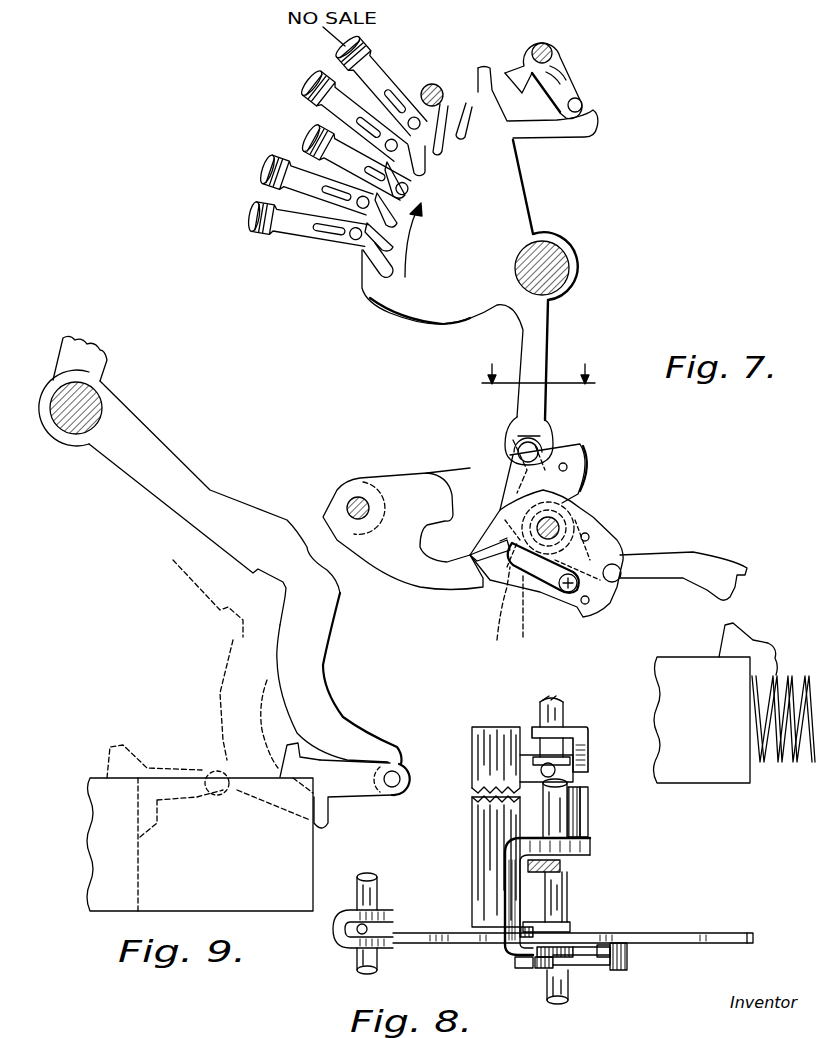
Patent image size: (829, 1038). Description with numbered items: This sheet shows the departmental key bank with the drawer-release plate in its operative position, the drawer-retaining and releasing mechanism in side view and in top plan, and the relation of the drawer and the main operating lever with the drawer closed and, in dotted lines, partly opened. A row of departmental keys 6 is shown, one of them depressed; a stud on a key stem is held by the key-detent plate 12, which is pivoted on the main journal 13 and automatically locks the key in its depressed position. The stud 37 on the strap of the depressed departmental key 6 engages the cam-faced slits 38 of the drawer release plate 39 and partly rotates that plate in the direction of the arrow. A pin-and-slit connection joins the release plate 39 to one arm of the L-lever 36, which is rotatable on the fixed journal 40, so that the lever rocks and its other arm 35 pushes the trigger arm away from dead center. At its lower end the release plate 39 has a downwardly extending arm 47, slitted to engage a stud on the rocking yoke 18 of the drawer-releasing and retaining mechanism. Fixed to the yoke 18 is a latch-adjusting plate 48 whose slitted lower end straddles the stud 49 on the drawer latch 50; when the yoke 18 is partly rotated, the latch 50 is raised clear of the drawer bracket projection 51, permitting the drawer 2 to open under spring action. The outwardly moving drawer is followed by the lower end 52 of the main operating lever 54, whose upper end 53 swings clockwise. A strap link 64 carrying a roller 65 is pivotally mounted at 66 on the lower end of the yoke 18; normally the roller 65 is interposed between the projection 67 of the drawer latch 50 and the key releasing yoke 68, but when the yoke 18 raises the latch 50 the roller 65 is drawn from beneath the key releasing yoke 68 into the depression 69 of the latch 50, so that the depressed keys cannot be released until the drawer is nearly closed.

In FIG. 7, the drawer 2 is at (735, 720).
In FIG. 9, the drawer 2 is at (200, 844).
In FIG. 7, the departmental key 6 is at (312, 133).
In FIG. 7, the key-detent plate 12 is at (539, 361).
In FIG. 7, the main journal 13 is at (557, 257).
In FIG. 9, the main journal 13 is at (87, 403).
In FIG. 7, the rocking yoke 18 is at (580, 513).
In FIG. 8, the rocking yoke 18 is at (583, 815).
In FIG. 7, the arm of L-lever 35 is at (520, 66).
In FIG. 7, the L-lever 36 is at (573, 85).
In FIG. 7, the stud 37 is at (409, 189).
In FIG. 7, the cam-faced slits 38 is at (438, 123).
In FIG. 7, the drawer release plate 39 is at (510, 187).
In FIG. 7, the fixed journal 40 is at (548, 52).
In FIG. 7, the downwardly extending arm 47 is at (540, 425).
In FIG. 8, the downwardly extending arm 47 is at (560, 866).
In FIG. 7, the latch-adjusting plate 48 is at (607, 540).
In FIG. 8, the latch-adjusting plate 48 is at (577, 962).
In FIG. 7, the stud 49 is at (615, 582).
In FIG. 8, the stud 49 is at (608, 967).
In FIG. 7, the drawer latch 50 is at (657, 557).
In FIG. 8, the drawer latch 50 is at (653, 937).
In FIG. 7, the drawer bracket projection 51 is at (733, 637).
In FIG. 9, the drawer bracket projection 51 is at (127, 753).
In FIG. 9, the lower end of main operating lever 52 is at (343, 730).
In FIG. 9, the upper end of main operating lever 53 is at (70, 352).
In FIG. 9, the main operating lever 54 is at (120, 433).
In FIG. 7, the strap link 64 is at (543, 582).
In FIG. 8, the strap link 64 is at (525, 967).
In FIG. 7, the roller 65 is at (490, 614).
In FIG. 7, the pivot 66 is at (571, 591).
In FIG. 7, the projection 67 is at (499, 558).
In FIG. 7, the key releasing yoke 68 is at (503, 547).
In FIG. 8, the key releasing yoke 68 is at (490, 833).
In FIG. 7, the depression 69 is at (520, 617).
In FIG. 8, the depression 69 is at (572, 925).